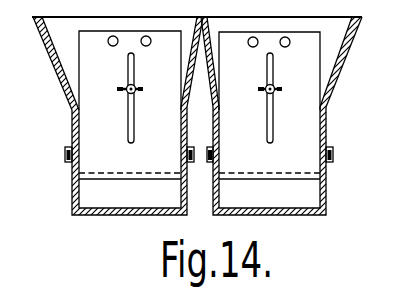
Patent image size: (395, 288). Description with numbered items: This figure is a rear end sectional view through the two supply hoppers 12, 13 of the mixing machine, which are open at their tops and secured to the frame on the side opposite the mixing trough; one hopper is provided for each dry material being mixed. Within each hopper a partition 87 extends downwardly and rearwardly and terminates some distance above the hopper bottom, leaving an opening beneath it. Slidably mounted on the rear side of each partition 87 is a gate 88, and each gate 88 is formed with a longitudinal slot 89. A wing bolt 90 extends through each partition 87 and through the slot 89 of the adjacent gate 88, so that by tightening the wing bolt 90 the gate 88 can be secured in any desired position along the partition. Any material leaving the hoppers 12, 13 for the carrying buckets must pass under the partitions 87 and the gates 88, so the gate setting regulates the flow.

The supply hopper 12 is at (72, 210).
The supply hopper 13 is at (323, 212).
The partition 87 is at (70, 69).
The gate 88 is at (97, 143).
The longitudinal slot 89 is at (134, 122).
The wing bolt 90 is at (135, 88).